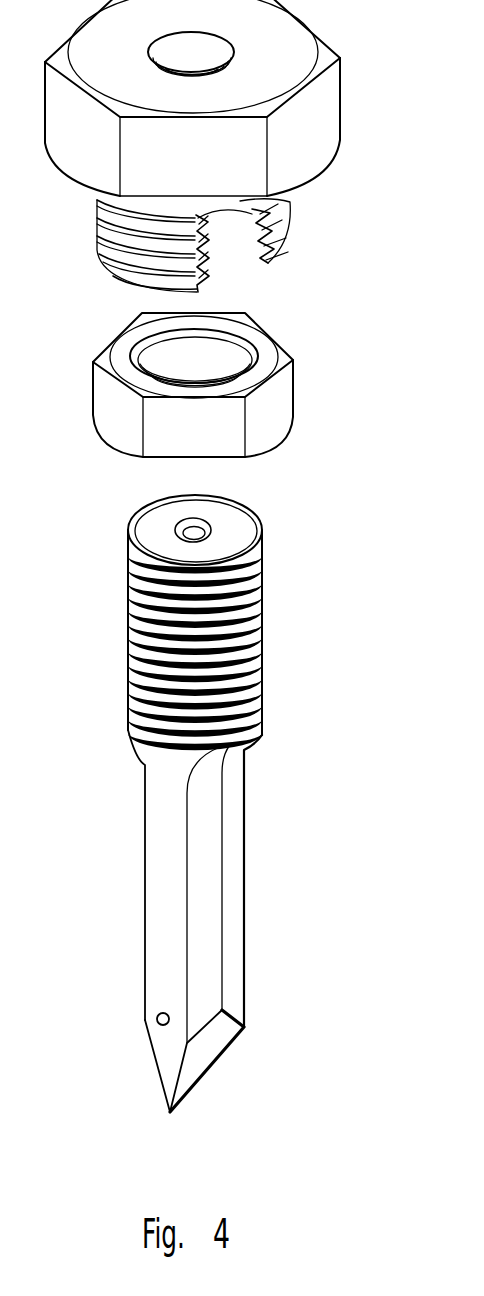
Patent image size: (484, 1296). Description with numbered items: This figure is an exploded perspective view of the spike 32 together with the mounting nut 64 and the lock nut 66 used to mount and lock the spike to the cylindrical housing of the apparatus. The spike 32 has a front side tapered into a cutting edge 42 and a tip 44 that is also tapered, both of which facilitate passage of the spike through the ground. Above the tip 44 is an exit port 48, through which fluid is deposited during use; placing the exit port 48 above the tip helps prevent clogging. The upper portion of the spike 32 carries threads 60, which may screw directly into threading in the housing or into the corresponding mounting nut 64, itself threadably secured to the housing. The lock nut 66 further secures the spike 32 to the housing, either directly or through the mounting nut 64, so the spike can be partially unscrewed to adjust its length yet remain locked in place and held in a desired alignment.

The spike 32 is at (220, 822).
The cutting edge 42 is at (209, 939).
The tip 44 is at (211, 1089).
The exit port 48 is at (157, 1019).
The threads 60 is at (265, 637).
The mounting nut 64 is at (207, 179).
The lock nut 66 is at (207, 437).